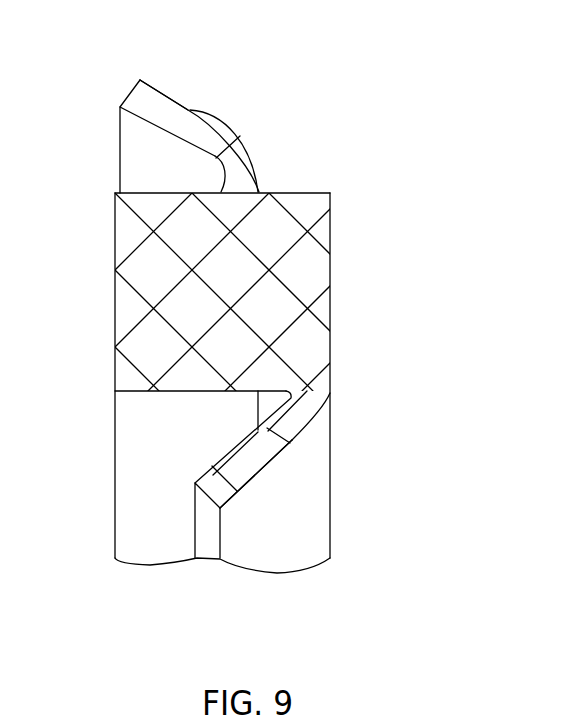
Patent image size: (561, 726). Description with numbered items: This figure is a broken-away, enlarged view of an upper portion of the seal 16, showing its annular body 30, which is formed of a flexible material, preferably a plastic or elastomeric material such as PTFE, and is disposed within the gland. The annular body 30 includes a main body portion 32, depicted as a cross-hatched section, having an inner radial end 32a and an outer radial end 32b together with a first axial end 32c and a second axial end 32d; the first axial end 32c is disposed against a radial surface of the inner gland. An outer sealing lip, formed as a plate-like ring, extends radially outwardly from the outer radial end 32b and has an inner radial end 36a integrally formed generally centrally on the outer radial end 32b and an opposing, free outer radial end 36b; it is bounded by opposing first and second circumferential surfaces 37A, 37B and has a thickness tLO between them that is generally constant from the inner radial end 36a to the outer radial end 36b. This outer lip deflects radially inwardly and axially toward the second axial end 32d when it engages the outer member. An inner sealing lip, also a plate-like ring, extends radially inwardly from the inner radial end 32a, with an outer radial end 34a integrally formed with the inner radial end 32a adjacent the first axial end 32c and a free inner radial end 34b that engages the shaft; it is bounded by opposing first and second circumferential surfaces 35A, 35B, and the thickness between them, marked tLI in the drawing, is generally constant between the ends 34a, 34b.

The seal 16 is at (293, 107).
The annular body 30 is at (372, 241).
The main body portion 32 is at (344, 336).
The inner radial end 32a is at (142, 393).
The outer radial end 32b is at (125, 187).
The first axial end 32c is at (334, 282).
The second axial end 32d is at (117, 277).
The outer radial end of inner sealing lip 34a is at (312, 407).
The free inner radial end of inner sealing lip 34b is at (200, 502).
The first circumferential surface of inner sealing lip 35A is at (283, 484).
The second circumferential surface of inner sealing lip 35B is at (242, 445).
The inner radial end of outer sealing lip 36a is at (243, 183).
The free outer radial end of outer sealing lip 36b is at (126, 100).
The first circumferential surface of outer sealing lip 37A is at (174, 140).
The second circumferential surface of outer sealing lip 37B is at (200, 113).
The outer sealing lip thickness tLO is at (182, 82).
The inner tab layer thickness tLI is at (253, 504).